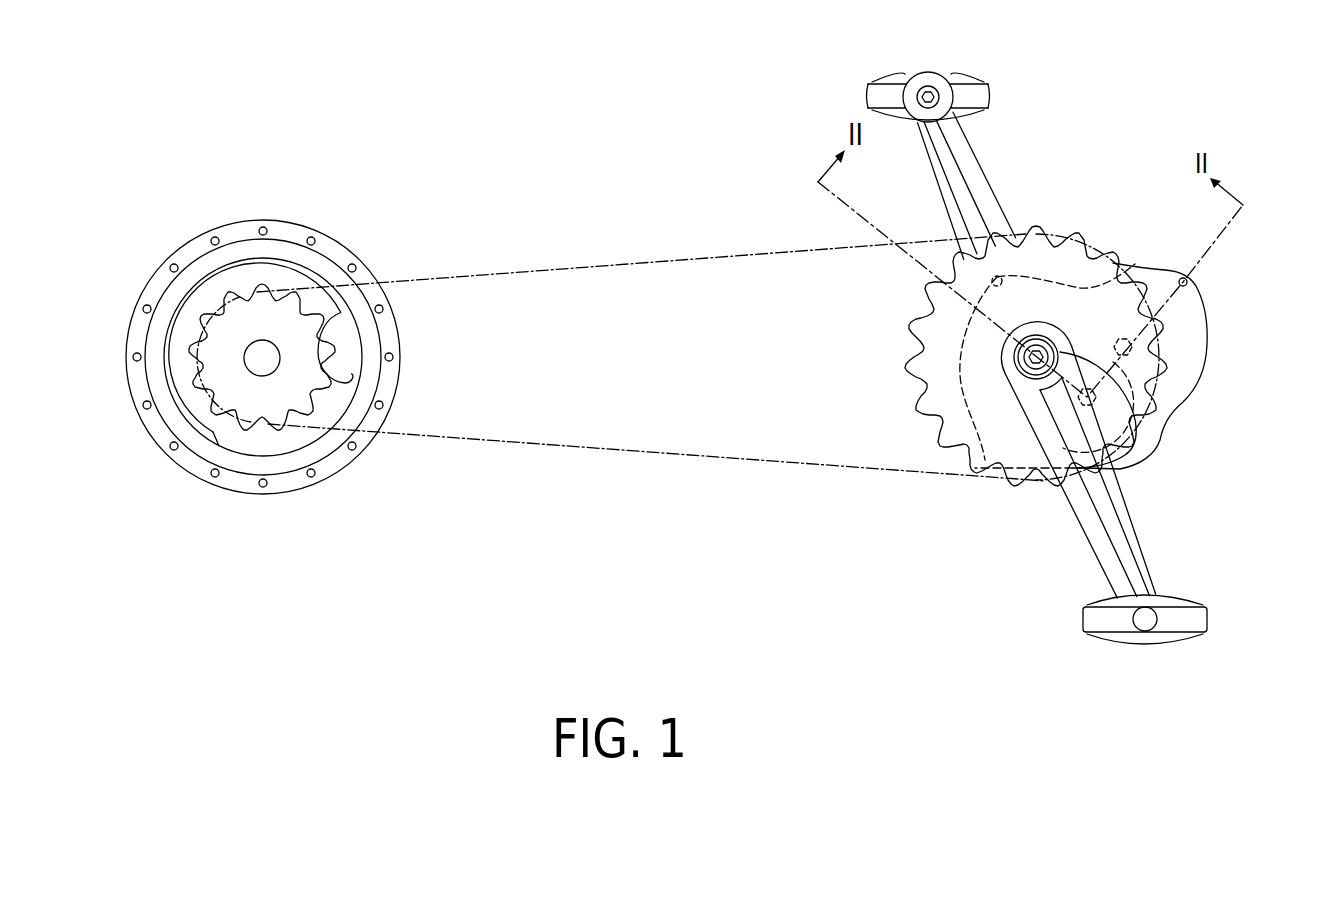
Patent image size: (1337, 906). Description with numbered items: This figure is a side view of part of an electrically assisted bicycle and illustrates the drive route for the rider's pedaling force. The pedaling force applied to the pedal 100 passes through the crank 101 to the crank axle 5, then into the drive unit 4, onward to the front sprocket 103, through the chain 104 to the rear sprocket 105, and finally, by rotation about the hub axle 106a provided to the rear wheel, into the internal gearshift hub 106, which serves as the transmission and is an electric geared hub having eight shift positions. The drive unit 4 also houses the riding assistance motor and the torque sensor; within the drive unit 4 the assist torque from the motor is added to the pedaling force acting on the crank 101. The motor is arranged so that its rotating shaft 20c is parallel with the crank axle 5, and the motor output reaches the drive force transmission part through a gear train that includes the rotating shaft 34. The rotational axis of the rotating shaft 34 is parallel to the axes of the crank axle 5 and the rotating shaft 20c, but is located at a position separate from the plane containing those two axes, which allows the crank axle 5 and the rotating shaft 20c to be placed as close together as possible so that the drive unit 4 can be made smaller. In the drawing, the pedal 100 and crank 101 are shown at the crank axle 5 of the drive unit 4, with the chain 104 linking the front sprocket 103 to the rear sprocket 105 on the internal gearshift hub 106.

The drive unit 4 is at (1207, 320).
The crank axle 5 is at (1062, 355).
The rotating shaft 20c is at (1195, 350).
The rotating shaft 34 is at (1145, 455).
The pedal 100 is at (1190, 623).
The crank 101 is at (1145, 548).
The front sprocket 103 is at (993, 478).
The chain 104 is at (738, 460).
The rear sprocket 105 is at (300, 418).
The internal gearshift hub 106 is at (212, 214).
The hub axle 106a is at (263, 340).